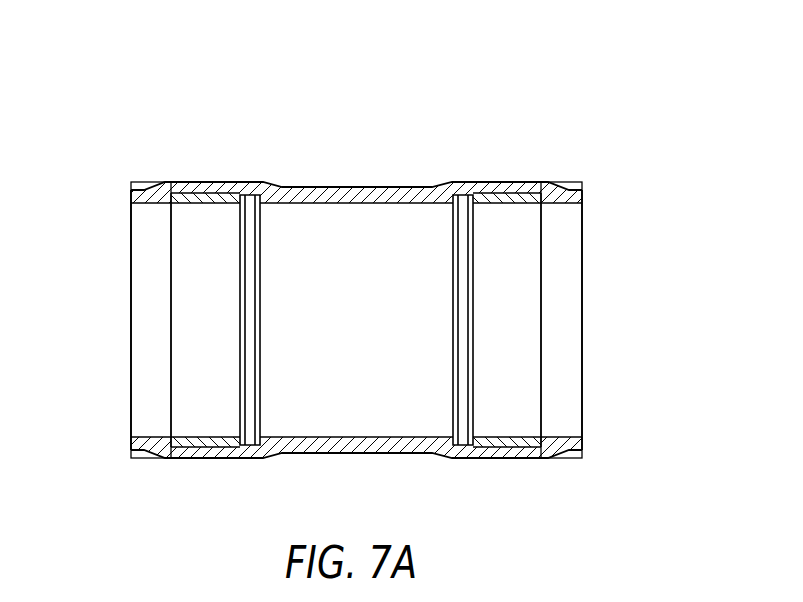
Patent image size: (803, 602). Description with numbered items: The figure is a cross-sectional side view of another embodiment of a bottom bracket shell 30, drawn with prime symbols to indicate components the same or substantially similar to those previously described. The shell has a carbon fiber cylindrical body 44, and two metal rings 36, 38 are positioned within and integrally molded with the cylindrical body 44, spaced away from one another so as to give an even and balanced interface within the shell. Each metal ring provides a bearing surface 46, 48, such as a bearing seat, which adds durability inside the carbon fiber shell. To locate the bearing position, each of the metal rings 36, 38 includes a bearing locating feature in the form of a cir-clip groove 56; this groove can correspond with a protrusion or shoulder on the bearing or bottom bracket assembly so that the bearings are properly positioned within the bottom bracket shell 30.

The bottom bracket shell 30 is at (493, 93).
The carbon fiber cylindrical body 44 is at (328, 189).
The bearing surface 48 is at (218, 203).
The bearing surface 46 is at (495, 203).
The metal ring 38 is at (217, 422).
The metal ring 36 is at (497, 422).
The cir-clip groove 56 is at (245, 398).